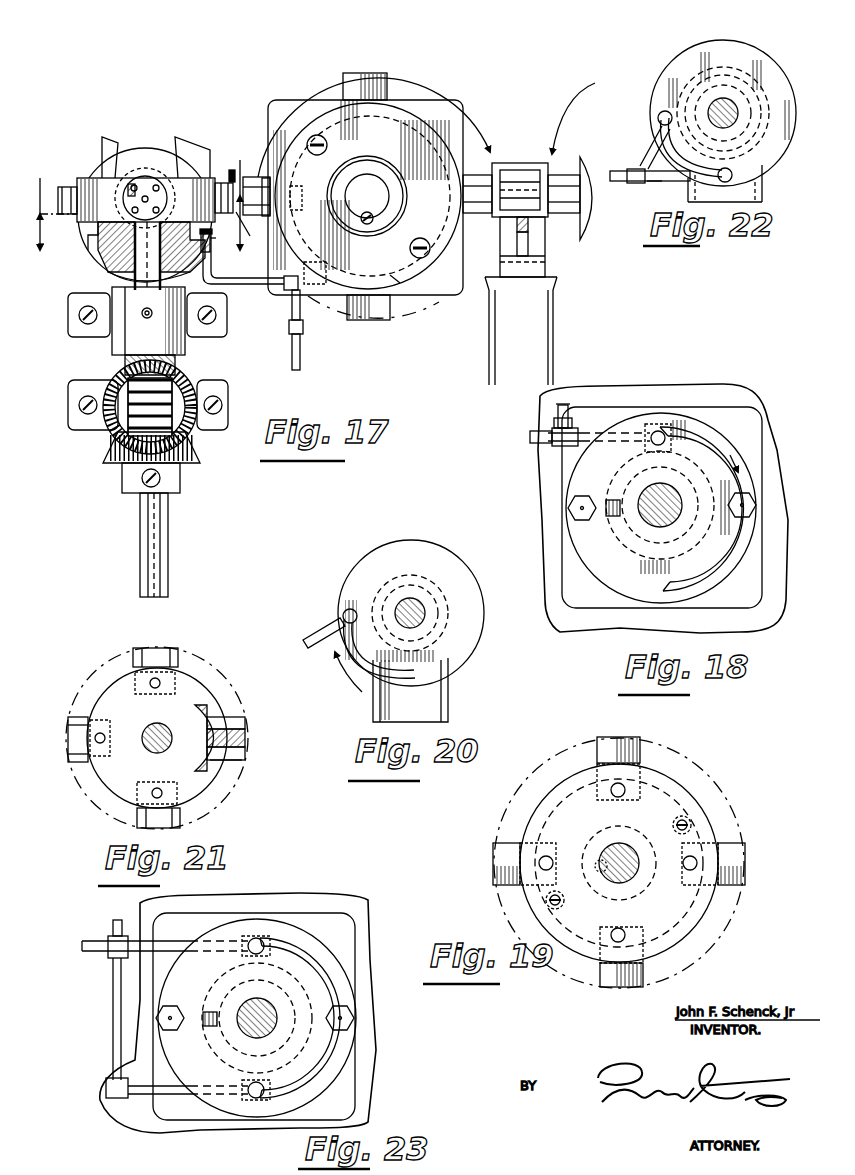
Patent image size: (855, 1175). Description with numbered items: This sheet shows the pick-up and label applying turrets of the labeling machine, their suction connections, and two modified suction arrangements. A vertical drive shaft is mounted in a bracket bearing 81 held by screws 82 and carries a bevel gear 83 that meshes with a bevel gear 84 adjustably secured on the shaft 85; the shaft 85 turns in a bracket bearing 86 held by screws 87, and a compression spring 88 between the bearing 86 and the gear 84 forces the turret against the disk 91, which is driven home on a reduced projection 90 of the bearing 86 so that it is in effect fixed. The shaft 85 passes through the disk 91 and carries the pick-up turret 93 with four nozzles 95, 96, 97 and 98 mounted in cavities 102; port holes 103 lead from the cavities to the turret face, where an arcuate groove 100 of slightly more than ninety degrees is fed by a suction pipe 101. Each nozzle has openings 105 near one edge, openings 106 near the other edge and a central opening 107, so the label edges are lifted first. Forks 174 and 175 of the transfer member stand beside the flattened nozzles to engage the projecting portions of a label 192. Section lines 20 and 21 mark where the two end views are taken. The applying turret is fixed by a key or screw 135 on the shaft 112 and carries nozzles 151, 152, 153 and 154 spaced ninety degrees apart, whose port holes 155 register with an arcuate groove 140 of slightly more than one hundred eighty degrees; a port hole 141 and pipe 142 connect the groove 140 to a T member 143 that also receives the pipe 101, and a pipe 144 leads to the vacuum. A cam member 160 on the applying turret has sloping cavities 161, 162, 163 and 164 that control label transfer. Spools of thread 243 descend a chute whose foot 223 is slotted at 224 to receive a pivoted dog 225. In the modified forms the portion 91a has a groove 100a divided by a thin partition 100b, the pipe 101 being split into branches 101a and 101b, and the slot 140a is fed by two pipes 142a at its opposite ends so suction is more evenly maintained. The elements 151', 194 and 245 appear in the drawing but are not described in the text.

In FIG. 17, the section line 20 is at (139, 257).
In FIG. 17, the section line 21 is at (140, 198).
In FIG. 17, the bracket bearing 81 is at (212, 385).
In FIG. 17, the screws 82 is at (84, 393).
In FIG. 17, the bevel gear 83 is at (185, 380).
In FIG. 17, the bevel gear 84 is at (200, 446).
In FIG. 17, the shaft 85 is at (160, 530).
In FIG. 22, the shaft 85 is at (740, 110).
In FIG. 20, the shaft 85 is at (420, 600).
In FIG. 21, the shaft 85 is at (163, 725).
In FIG. 17, the bracket bearing 86 is at (118, 289).
In FIG. 22, the bracket bearing 86 is at (762, 193).
In FIG. 20, the bracket bearing 86 is at (440, 700).
In FIG. 17, the screws 87 is at (75, 322).
In FIG. 17, the compression spring 88 is at (128, 363).
In FIG. 17, the reduced projection 90 is at (108, 258).
In FIG. 17, the disk 91 is at (80, 240).
In FIG. 20, the disk 91 is at (388, 548).
In FIG. 22, the portion 91a is at (735, 58).
In FIG. 17, the pick-up turret 93 is at (178, 178).
In FIG. 17, the nozzle 95 is at (215, 194).
In FIG. 21, the nozzle 95 is at (235, 715).
In FIG. 17, the nozzle 96 is at (147, 178).
In FIG. 21, the nozzle 96 is at (160, 655).
In FIG. 17, the nozzle 97 is at (70, 186).
In FIG. 21, the nozzle 97 is at (72, 745).
In FIG. 21, the nozzle 98 is at (180, 820).
In FIG. 17, the arcuate groove 100 is at (220, 242).
In FIG. 20, the arcuate groove 100 is at (413, 672).
In FIG. 22, the groove 100a is at (662, 108).
In FIG. 22, the partition 100b is at (700, 150).
In FIG. 17, the suction pipe 101 is at (225, 256).
In FIG. 22, the suction pipe 101 is at (622, 170).
In FIG. 18, the suction pipe 101 is at (563, 404).
In FIG. 20, the suction pipe 101 is at (332, 628).
In FIG. 23, the suction pipe 101 is at (113, 925).
In FIG. 22, the pipe branch 101a is at (648, 141).
In FIG. 22, the pipe branch 101b is at (652, 181).
In FIG. 21, the cavities 102 is at (225, 762).
In FIG. 21, the port holes 103 is at (162, 683).
In FIG. 21, the openings 105 is at (246, 722).
In FIG. 21, the openings 106 is at (246, 752).
In FIG. 21, the central opening 107 is at (246, 738).
In FIG. 17, the shaft 112 is at (372, 185).
In FIG. 18, the shaft 112 is at (660, 505).
In FIG. 19, the shaft 112 is at (622, 843).
In FIG. 23, the shaft 112 is at (265, 1000).
In FIG. 17, the key or screw 135 is at (367, 199).
In FIG. 19, the key or screw 135 is at (600, 870).
In FIG. 18, the arcuate groove 140 is at (705, 430).
In FIG. 23, the arcuate groove 140 is at (330, 1000).
In FIG. 23, the slot 140a is at (300, 1068).
In FIG. 18, the port hole 141 is at (656, 428).
In FIG. 23, the port hole 141 is at (268, 948).
In FIG. 18, the pipe 142 is at (586, 432).
In FIG. 23, the pipes 142a is at (160, 946).
In FIG. 17, the T member 143 is at (318, 282).
In FIG. 18, the T member 143 is at (548, 450).
In FIG. 17, the pipe 144 is at (292, 352).
In FIG. 18, the pipe 144 is at (545, 428).
In FIG. 17, the nozzle 151 is at (477, 185).
In FIG. 19, the nozzle 151 is at (749, 861).
In FIG. 17, the shaft boss 151' is at (570, 189).
In FIG. 17, the nozzle 152 is at (366, 78).
In FIG. 19, the nozzle 152 is at (617, 980).
In FIG. 17, the nozzle 153 is at (272, 150).
In FIG. 19, the nozzle 153 is at (494, 850).
In FIG. 17, the nozzle 154 is at (372, 318).
In FIG. 19, the nozzle 154 is at (618, 742).
In FIG. 19, the port holes 155 is at (616, 796).
In FIG. 17, the cam member 160 is at (405, 110).
In FIG. 17, the cavity 161 is at (425, 145).
In FIG. 17, the cavity 162 is at (355, 100).
In FIG. 17, the cavity 163 is at (292, 210).
In FIG. 17, the cavity 164 is at (398, 282).
In FIG. 17, the fork 174 is at (224, 170).
In FIG. 17, the fork 175 is at (253, 230).
In FIG. 17, the label 192 is at (556, 227).
In FIG. 17, the cover 194 is at (108, 140).
In FIG. 17, the foot 223 is at (545, 266).
In FIG. 17, the slot 224 is at (530, 250).
In FIG. 17, the dog 225 is at (530, 232).
In FIG. 17, the spool of thread 243 is at (562, 118).
In FIG. 17, the tube 245 is at (540, 310).